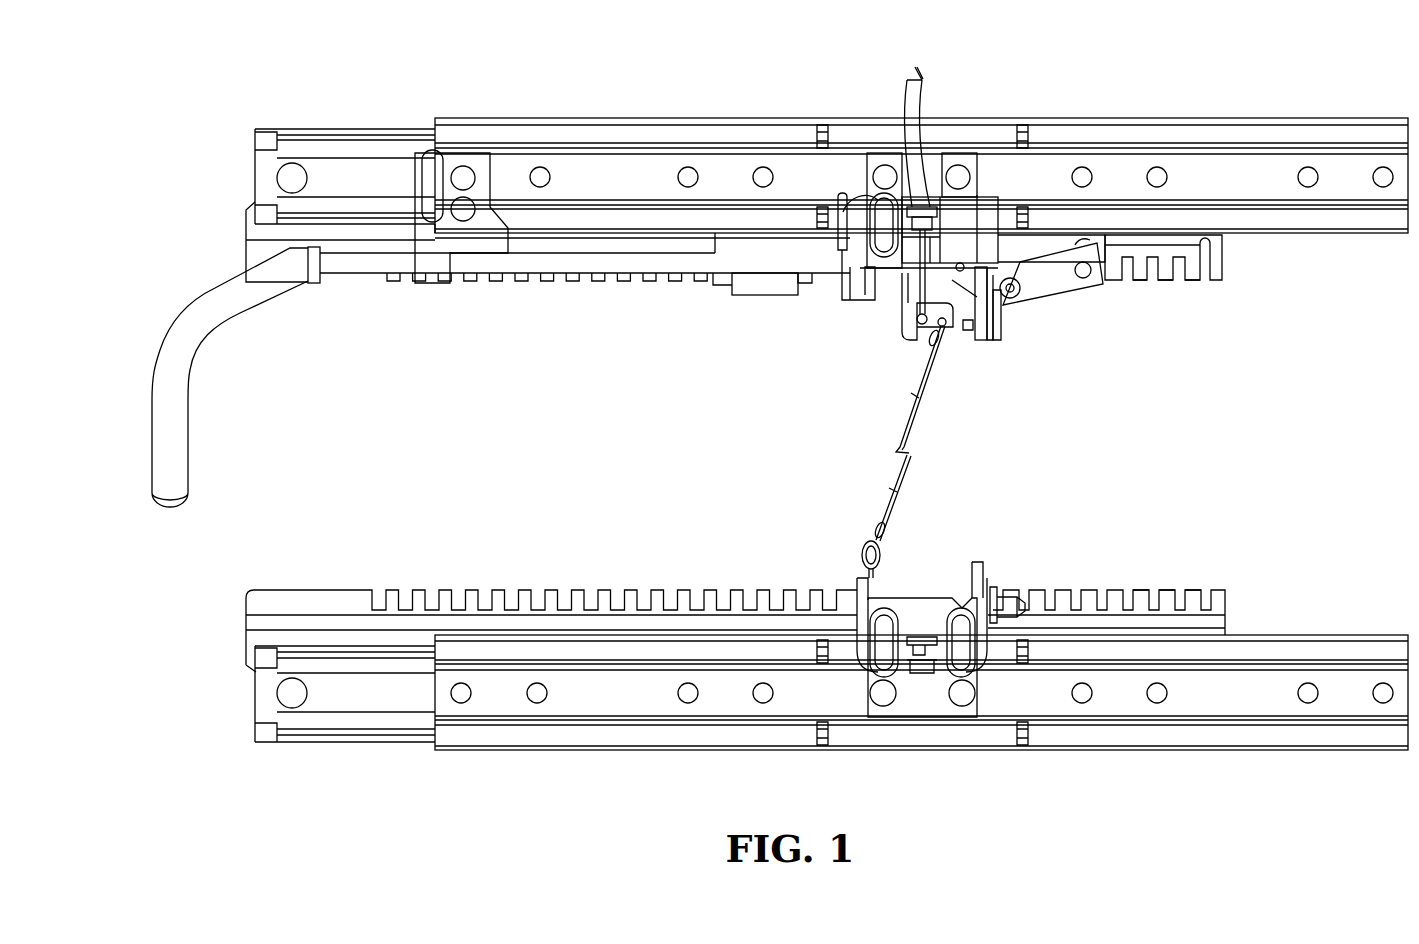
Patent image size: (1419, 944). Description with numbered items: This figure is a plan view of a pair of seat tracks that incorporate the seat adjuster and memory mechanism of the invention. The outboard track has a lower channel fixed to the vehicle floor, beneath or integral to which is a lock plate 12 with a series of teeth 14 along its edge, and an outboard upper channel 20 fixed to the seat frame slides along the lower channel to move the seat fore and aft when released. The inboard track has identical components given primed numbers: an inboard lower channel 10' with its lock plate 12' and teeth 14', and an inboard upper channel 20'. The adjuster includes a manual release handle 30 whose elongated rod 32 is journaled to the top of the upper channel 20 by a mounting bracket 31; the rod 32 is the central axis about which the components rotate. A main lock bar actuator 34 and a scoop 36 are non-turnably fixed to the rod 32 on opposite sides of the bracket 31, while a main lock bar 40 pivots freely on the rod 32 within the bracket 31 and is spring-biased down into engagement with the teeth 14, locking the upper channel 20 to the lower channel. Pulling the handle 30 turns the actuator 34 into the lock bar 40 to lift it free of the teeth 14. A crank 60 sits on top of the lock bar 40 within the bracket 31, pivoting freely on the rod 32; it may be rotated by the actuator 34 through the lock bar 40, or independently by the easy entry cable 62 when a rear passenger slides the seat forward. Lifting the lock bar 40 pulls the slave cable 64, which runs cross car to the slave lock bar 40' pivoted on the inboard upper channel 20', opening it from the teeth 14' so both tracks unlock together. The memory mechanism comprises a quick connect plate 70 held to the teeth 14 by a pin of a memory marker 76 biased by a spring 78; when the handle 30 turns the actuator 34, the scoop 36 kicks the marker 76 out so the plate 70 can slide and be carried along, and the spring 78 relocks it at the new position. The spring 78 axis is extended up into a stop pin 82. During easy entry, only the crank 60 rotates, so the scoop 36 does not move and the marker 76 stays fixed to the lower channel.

The inboard lower channel 10' is at (551, 706).
The lock plate 12 is at (1211, 259).
The inboard lock plate 12' is at (1156, 607).
The teeth 14 is at (1166, 317).
The inboard lower channel teeth 14' is at (1167, 554).
The outboard upper channel 20 is at (831, 139).
The inboard upper channel 20' is at (831, 737).
The manual release handle 30 is at (172, 385).
The mounting bracket 31 is at (886, 212).
The elongated rod 32 is at (610, 265).
The main lock bar actuator 34 is at (858, 285).
The scoop 36 is at (1045, 250).
The main lock bar 40 is at (963, 268).
The slave lock bar 40' is at (950, 607).
The crank 60 is at (905, 300).
The easy entry cable 62 is at (920, 92).
The slave cable 64 is at (912, 455).
The quick connect plate 70 is at (757, 290).
The memory marker 76 is at (1093, 285).
The spring 78 is at (1012, 296).
The stop pin 82 is at (998, 308).